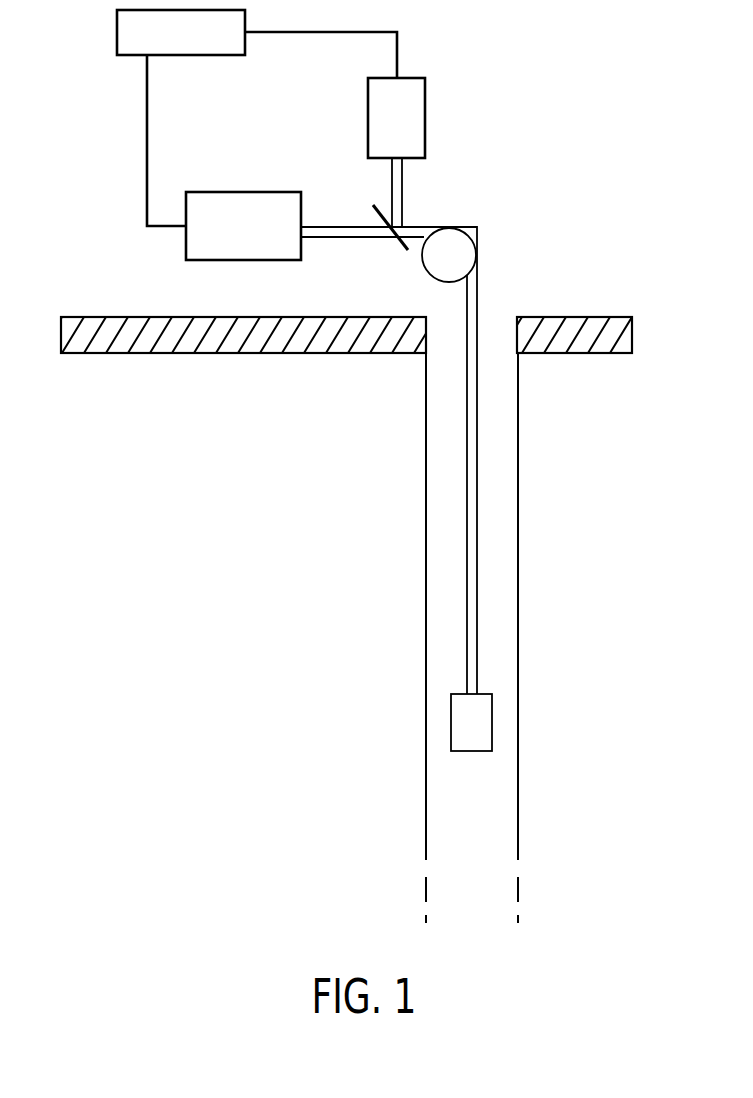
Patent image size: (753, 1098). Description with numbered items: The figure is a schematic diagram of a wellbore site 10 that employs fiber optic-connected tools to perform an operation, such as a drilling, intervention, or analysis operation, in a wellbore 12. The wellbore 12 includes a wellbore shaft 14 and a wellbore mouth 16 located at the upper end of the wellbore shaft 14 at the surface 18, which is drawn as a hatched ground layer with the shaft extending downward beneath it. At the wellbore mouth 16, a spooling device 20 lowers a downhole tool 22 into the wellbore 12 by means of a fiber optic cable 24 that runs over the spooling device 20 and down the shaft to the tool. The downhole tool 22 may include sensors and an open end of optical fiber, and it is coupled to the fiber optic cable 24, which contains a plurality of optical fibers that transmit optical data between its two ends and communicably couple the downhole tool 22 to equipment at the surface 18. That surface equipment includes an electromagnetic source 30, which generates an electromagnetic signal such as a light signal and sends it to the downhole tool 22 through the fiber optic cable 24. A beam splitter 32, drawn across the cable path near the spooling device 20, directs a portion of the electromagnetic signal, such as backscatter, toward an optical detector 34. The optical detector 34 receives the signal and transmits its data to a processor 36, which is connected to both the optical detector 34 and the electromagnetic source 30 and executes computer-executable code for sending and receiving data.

The wellbore site 10 is at (474, 53).
The wellbore 12 is at (484, 820).
The wellbore shaft 14 is at (492, 521).
The wellbore mouth 16 is at (497, 312).
The surface 18 is at (600, 325).
The spooling device 20 is at (426, 264).
The downhole tool 22 is at (492, 725).
The fiber optic cable 24 is at (466, 473).
The electromagnetic source 30 is at (240, 192).
The beam splitter 32 is at (382, 218).
The optical detector 34 is at (426, 115).
The processor 36 is at (117, 32).